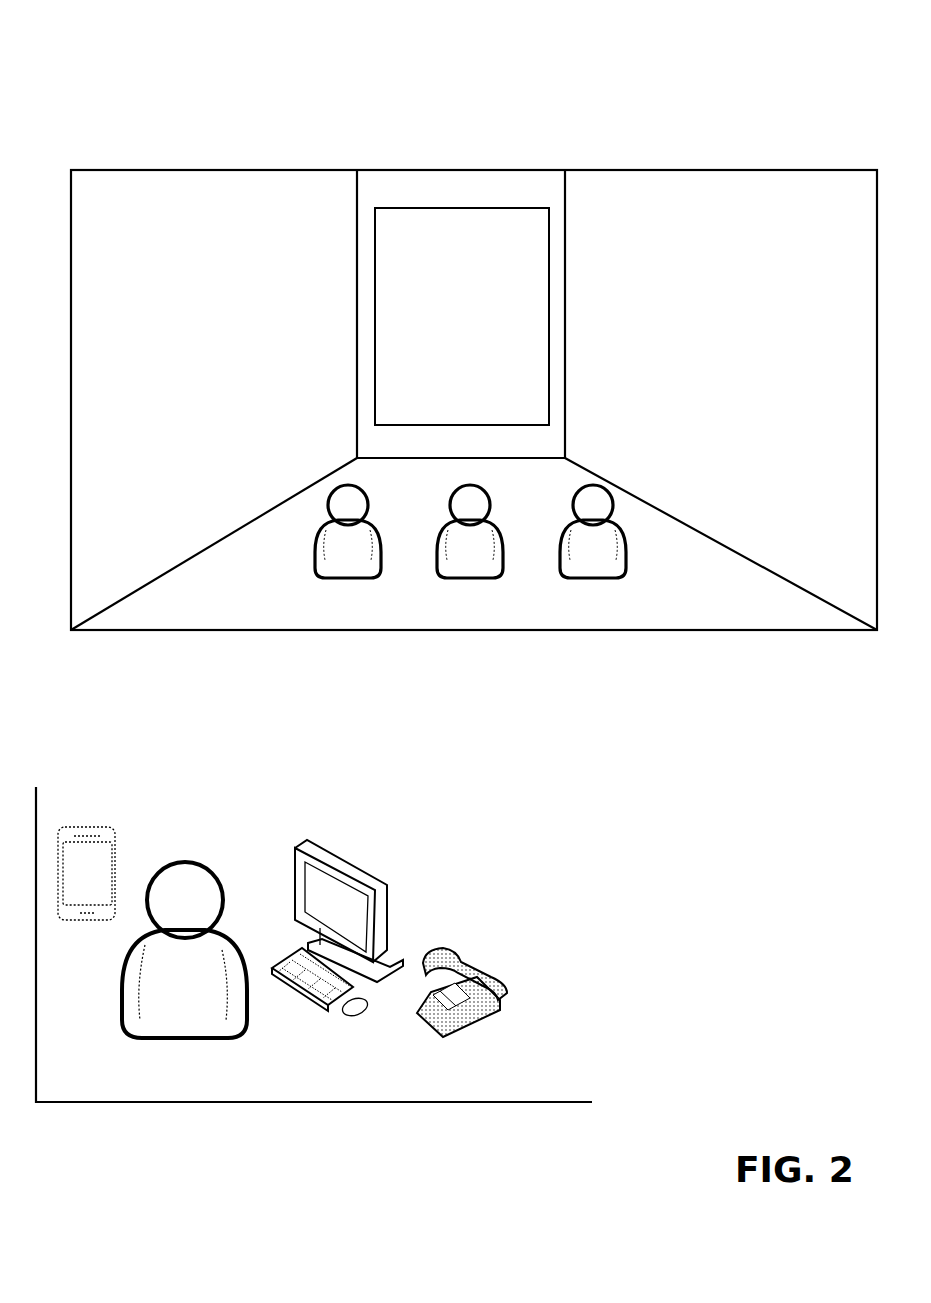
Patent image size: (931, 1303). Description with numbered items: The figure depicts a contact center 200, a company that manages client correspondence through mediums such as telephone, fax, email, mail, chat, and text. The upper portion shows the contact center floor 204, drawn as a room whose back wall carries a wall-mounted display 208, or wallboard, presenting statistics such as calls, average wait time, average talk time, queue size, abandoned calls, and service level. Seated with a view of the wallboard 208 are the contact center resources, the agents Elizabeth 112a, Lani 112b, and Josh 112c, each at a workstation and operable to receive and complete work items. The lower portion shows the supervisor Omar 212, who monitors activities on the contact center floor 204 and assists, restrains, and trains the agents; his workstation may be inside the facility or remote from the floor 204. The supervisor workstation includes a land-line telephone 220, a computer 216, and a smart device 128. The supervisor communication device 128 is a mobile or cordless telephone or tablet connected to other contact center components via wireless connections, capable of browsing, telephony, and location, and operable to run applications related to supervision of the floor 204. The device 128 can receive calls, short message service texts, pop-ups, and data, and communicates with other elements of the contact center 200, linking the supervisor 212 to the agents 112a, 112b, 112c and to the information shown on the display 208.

The contact center 200 is at (456, 558).
The contact center floor 204 is at (474, 355).
The display 208 is at (462, 272).
The Elizabeth 112a is at (347, 596).
The Lani 112b is at (462, 596).
The Josh 112c is at (587, 596).
The supervisor communication device 128 is at (108, 828).
The supervisor 212 is at (188, 924).
The computer 216 is at (342, 893).
The land-line telephone 220 is at (482, 958).